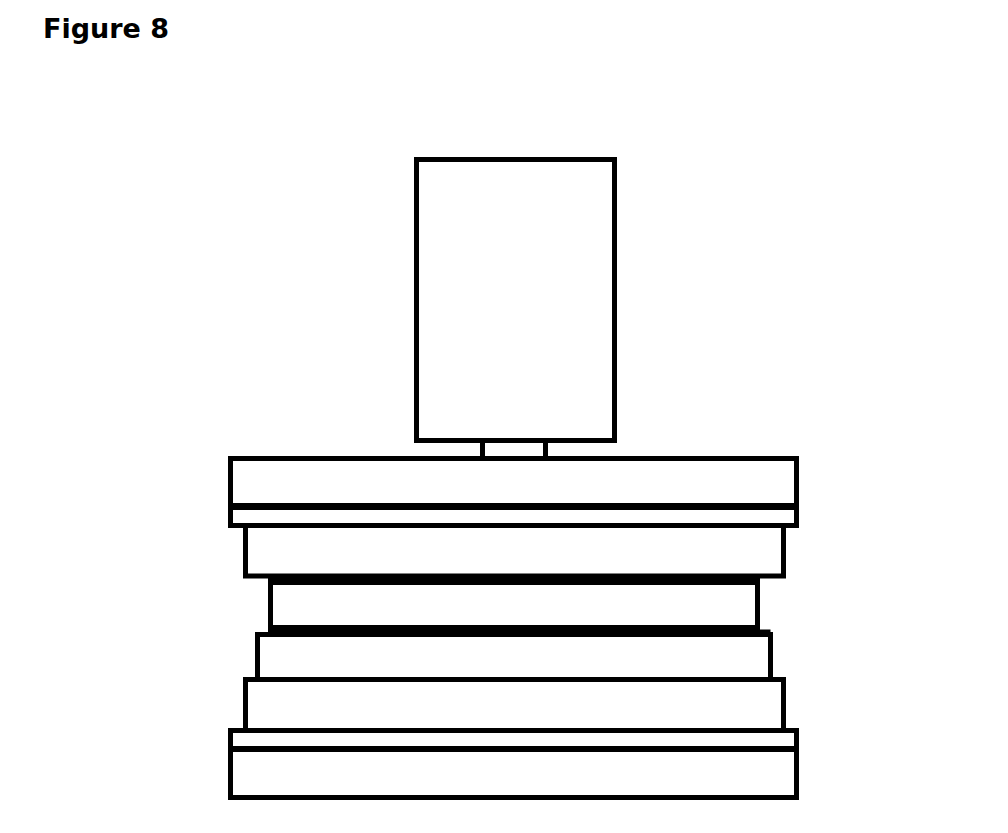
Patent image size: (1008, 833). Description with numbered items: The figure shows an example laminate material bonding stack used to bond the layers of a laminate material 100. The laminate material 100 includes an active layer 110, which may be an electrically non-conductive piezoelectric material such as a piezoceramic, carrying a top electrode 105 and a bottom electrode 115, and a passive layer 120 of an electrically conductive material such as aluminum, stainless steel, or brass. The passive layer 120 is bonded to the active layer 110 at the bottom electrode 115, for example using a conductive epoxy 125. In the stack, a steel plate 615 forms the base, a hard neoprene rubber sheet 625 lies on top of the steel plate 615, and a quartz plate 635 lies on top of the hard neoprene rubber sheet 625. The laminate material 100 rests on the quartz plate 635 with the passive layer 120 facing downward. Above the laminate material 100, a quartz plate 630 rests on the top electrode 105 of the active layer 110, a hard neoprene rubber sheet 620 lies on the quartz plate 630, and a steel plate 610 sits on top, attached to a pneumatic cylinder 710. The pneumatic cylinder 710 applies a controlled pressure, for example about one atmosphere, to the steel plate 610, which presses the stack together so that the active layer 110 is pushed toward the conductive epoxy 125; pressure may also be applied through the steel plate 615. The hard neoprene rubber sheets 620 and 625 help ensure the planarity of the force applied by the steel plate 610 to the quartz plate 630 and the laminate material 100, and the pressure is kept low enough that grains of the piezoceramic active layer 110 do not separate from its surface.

The pneumatic cylinder 710 is at (413, 373).
The steel plate 610 is at (228, 473).
The hard neoprene rubber sheet 620 is at (228, 517).
The quartz plate 630 is at (245, 567).
The laminate material 100 is at (268, 577).
The top electrode 105 is at (762, 581).
The active layer 110 is at (268, 615).
The bottom electrode 115 is at (762, 628).
The passive layer 120 is at (255, 660).
The conductive epoxy 125 is at (773, 641).
The quartz plate 635 is at (243, 688).
The hard neoprene rubber sheet 625 is at (228, 740).
The steel plate 615 is at (228, 788).